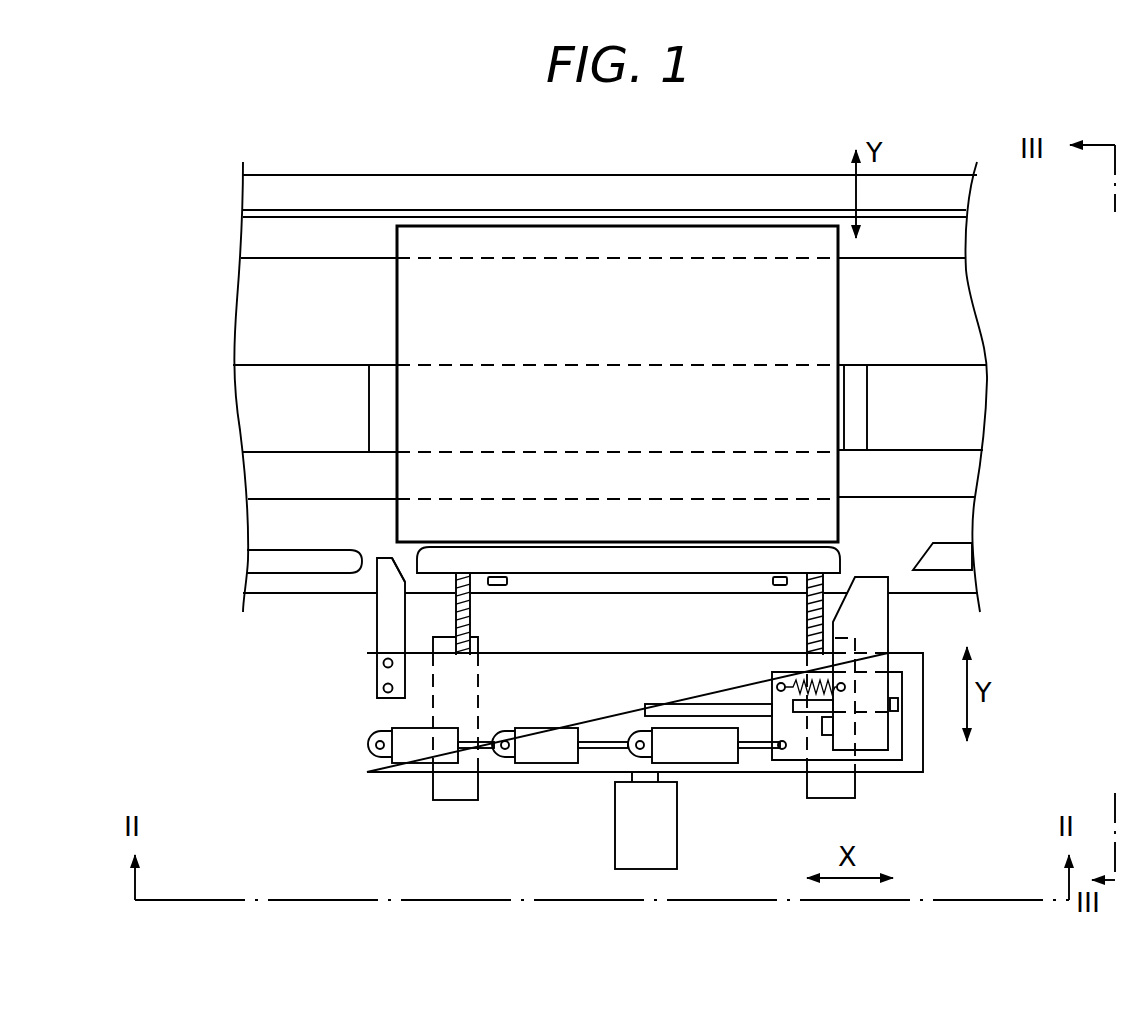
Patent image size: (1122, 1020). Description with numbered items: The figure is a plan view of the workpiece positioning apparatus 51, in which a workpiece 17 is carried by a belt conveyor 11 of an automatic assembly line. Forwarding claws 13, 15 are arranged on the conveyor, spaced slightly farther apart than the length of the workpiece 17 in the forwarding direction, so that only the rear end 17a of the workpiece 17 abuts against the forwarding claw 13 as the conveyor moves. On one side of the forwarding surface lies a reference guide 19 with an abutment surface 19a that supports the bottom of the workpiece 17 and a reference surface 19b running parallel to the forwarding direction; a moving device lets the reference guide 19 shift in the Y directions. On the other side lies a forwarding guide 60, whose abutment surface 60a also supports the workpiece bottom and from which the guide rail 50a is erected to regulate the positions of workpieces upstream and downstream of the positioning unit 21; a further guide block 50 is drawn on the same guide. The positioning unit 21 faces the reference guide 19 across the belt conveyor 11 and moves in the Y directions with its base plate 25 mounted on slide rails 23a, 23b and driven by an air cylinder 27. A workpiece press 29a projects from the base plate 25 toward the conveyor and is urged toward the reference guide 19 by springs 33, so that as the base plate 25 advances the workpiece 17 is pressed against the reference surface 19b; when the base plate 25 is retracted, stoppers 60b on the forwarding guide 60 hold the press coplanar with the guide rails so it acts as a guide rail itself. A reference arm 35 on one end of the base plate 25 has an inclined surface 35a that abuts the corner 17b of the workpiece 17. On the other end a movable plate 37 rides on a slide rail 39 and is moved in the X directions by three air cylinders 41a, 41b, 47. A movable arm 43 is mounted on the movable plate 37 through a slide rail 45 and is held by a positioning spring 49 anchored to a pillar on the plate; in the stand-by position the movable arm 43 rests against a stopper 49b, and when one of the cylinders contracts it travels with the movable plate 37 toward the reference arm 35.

The belt conveyor 11 is at (247, 413).
The forwarding claw 13 is at (378, 389).
The forwarding claw 15 is at (857, 442).
The workpiece 17 is at (428, 237).
The rear end 17a is at (397, 302).
The corner 17b is at (397, 523).
The reference guide 19 is at (272, 175).
The abutment surface 19a is at (910, 248).
The reference surface 19b is at (918, 218).
The positioning unit 21 is at (935, 777).
The slide rail 23a is at (455, 795).
The slide rail 23b is at (855, 780).
The base plate 25 is at (370, 713).
The air cylinder 27 is at (618, 840).
The workpiece press 29a is at (628, 558).
The spring 33 is at (470, 580).
The reference arm 35 is at (377, 612).
The inclined surface 35a is at (400, 573).
The movable plate 37 is at (778, 763).
The slide rail 39 is at (672, 705).
The air cylinder 41a is at (410, 775).
The air cylinder 41b is at (538, 765).
The movable arm 43 is at (878, 612).
The slide rail 45 is at (812, 713).
The air cylinder 47 is at (710, 738).
The positioning spring 49 is at (796, 692).
The stopper 49b is at (826, 735).
The guide block 50 is at (957, 558).
The guide rail 50a is at (288, 550).
The workpiece positioning apparatus 51 is at (995, 405).
The forwarding guide 60 is at (955, 497).
The abutment surface 60a is at (957, 527).
The stopper 60b is at (497, 577).